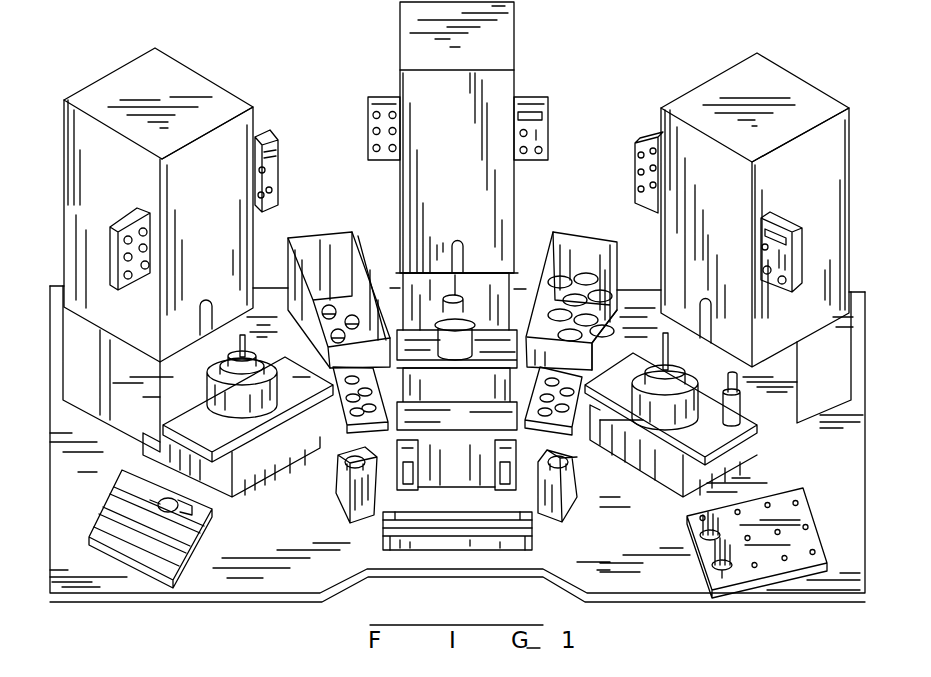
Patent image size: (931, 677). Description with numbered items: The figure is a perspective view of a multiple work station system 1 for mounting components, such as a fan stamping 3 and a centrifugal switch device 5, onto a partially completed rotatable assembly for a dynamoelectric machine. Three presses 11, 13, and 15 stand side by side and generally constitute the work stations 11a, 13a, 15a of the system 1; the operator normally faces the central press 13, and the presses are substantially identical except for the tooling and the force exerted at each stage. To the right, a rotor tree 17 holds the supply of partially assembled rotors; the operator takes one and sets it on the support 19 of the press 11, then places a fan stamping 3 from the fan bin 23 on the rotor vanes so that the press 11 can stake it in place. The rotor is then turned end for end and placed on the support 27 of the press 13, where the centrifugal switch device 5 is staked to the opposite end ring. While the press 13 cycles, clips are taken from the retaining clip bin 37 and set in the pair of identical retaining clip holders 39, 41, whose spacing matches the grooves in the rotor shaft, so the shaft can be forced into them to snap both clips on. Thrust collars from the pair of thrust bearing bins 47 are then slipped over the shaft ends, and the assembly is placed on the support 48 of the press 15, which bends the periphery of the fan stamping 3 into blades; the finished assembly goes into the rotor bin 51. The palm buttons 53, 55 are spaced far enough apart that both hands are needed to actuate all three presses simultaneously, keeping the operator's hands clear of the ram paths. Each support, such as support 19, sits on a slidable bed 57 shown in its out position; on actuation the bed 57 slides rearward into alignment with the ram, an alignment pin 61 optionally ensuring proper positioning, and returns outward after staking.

The multiple work station system 1 is at (635, 78).
The fan stamping 3 is at (560, 280).
The centrifugal switch device 5 is at (332, 302).
The press 11 is at (778, 80).
The work station 11a is at (783, 48).
The press 13 is at (498, 57).
The work station 13a is at (386, 51).
The press 15 is at (190, 80).
The work station 15a is at (275, 113).
The rotor tree 17 is at (808, 533).
The support 19 is at (658, 407).
The fan bin 23 is at (598, 250).
The support 27 is at (340, 243).
The retaining clip bin 37 is at (515, 543).
The retaining clip holder 39 is at (405, 457).
The retaining clip holder 41 is at (503, 453).
The thrust bearing bin 47 is at (340, 425).
The support 48 is at (228, 400).
The rotor bin 51 is at (178, 537).
The palm button 53 is at (350, 483).
The palm button 55 is at (567, 480).
The bed 57 is at (275, 453).
The alignment pin 61 is at (740, 407).